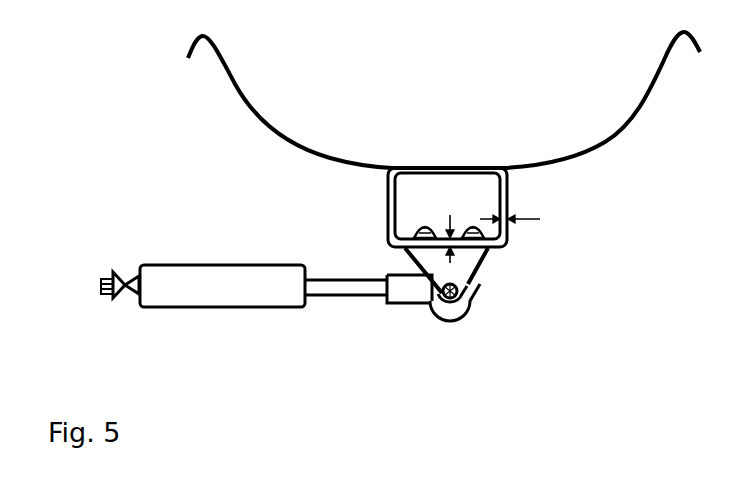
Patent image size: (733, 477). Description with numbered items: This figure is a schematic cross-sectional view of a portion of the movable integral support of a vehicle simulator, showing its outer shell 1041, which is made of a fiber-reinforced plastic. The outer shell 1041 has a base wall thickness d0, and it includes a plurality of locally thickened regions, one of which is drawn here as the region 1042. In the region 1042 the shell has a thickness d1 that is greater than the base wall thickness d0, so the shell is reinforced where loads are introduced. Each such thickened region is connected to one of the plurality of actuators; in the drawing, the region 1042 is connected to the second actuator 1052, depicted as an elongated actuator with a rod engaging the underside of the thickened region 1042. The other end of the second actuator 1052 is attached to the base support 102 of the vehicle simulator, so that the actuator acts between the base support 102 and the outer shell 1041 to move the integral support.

The outer shell 1041 is at (508, 182).
The region 1042 is at (492, 249).
The second actuator 1052 is at (232, 307).
The base support 102 is at (112, 297).
The base wall thickness d0 is at (540, 219).
The thickness d1 is at (450, 263).